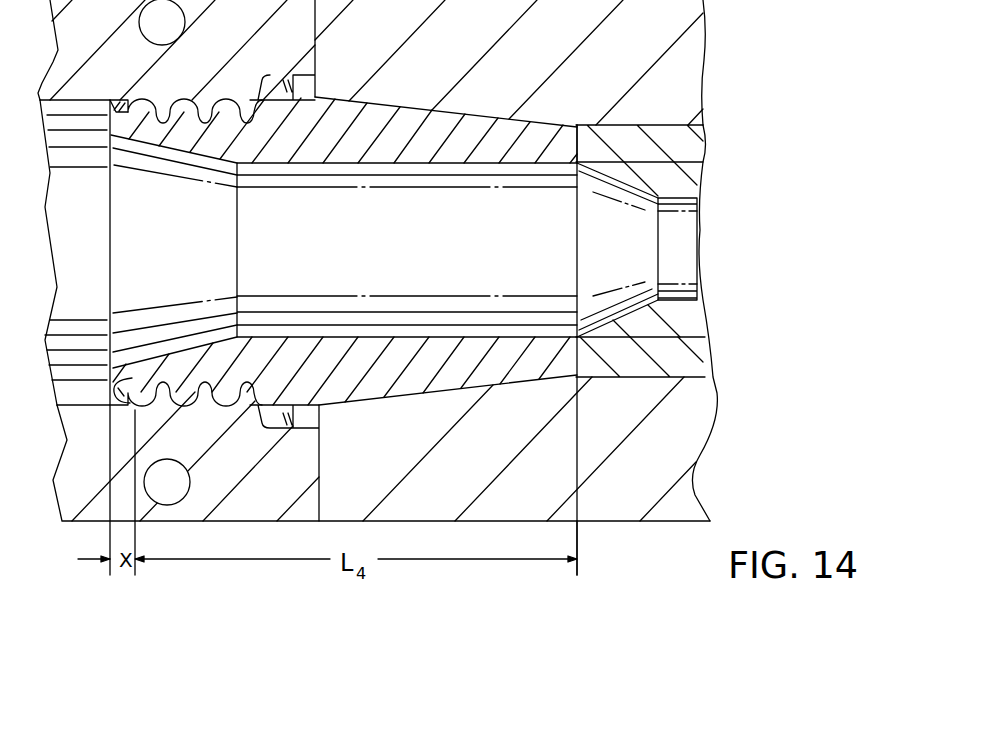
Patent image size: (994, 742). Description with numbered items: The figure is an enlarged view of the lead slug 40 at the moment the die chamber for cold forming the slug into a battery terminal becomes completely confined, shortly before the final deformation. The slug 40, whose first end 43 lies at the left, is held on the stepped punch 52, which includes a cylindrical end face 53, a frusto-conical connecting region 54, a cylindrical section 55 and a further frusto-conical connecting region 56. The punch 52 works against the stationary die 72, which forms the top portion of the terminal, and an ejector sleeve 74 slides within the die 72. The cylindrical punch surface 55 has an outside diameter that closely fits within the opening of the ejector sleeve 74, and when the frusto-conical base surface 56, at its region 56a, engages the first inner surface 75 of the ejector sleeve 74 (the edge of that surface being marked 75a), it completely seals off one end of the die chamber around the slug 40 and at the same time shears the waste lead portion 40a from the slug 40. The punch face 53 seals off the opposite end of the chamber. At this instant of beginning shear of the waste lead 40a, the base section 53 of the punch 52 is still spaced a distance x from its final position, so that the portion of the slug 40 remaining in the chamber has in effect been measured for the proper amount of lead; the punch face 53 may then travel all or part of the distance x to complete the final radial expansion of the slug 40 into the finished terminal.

The lead slug 40 is at (397, 396).
The waste lead portion 40a is at (693, 312).
The first end 43 is at (114, 381).
The punch 52 is at (90, 263).
The cylindrical end face 53 is at (121, 98).
The frusto-conical connecting region 54 is at (181, 263).
The cylindrical section 55 is at (393, 263).
The frusto-conical connecting region 56 is at (706, 338).
The region of frusto-conical base surface 56a is at (578, 218).
The die 72 is at (693, 428).
The ejector sleeve 74 is at (694, 369).
The first inner surface 75 is at (703, 166).
The ring edge 75a is at (577, 141).